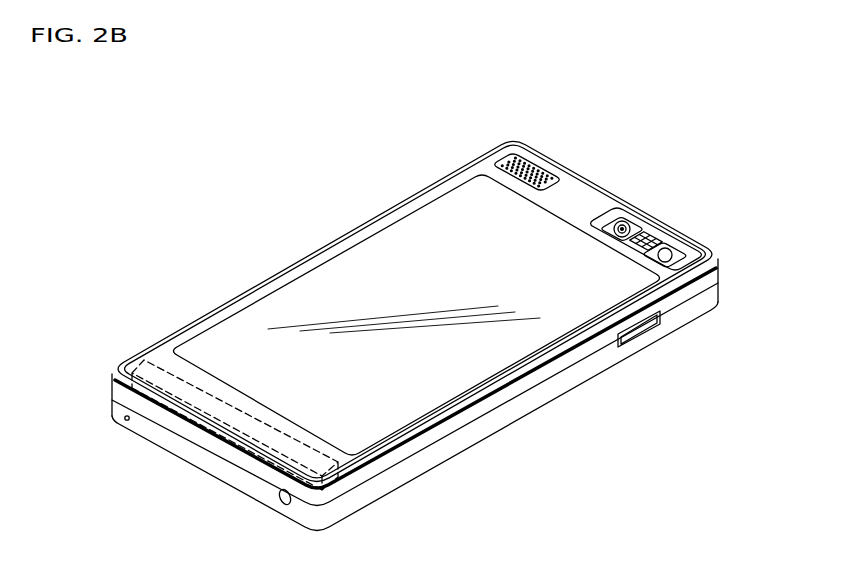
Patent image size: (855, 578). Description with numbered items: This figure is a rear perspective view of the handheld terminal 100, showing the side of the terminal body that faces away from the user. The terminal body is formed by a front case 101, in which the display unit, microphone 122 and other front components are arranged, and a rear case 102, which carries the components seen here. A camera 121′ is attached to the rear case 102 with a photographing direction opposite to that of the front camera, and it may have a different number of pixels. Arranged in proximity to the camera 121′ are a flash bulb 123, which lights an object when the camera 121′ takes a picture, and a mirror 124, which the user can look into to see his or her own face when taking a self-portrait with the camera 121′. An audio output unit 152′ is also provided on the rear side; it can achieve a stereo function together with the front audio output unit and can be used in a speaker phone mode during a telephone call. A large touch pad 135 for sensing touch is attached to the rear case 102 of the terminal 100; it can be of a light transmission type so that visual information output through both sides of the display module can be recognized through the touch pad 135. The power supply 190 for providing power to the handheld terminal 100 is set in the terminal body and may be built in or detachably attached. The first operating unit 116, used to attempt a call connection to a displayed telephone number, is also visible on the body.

The handheld terminal 100 is at (419, 318).
The front case 101 is at (722, 299).
The rear case 102 is at (722, 274).
The first operating unit 116 is at (281, 500).
The camera 121′ is at (623, 228).
The microphone 122 is at (125, 419).
The flash bulb 123 is at (650, 240).
The mirror 124 is at (667, 255).
The touch pad 135 is at (325, 278).
The audio output unit 152′ is at (538, 162).
The power supply 190 is at (145, 362).